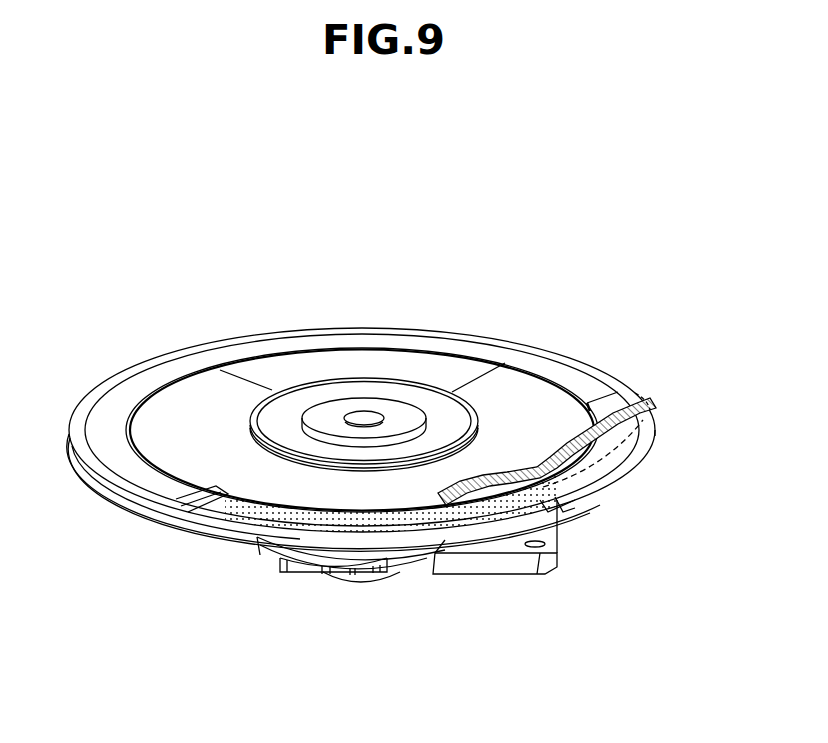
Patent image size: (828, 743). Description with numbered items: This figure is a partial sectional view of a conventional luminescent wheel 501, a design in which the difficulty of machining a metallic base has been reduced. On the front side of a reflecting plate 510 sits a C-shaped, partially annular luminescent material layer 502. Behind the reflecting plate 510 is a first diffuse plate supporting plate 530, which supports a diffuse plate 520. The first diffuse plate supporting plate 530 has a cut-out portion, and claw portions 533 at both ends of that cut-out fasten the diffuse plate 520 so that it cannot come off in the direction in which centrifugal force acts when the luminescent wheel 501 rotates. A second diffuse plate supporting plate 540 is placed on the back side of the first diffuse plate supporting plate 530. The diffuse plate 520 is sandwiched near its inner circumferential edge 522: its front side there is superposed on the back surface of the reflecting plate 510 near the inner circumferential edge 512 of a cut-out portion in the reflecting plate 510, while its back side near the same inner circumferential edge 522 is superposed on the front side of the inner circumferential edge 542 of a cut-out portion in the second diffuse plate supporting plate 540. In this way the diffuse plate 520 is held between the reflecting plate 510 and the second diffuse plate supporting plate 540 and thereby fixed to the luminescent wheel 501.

The luminescent wheel 501 is at (525, 250).
The luminescent material layer 502 is at (223, 352).
The reflecting plate 510 is at (197, 400).
The inner circumferential edge 512 is at (380, 507).
The diffuse plate 520 is at (218, 525).
The inner circumferential edge 522 is at (480, 500).
The first diffuse plate supporting plate 530 is at (582, 507).
The claw portions 533 is at (563, 508).
The second diffuse plate supporting plate 540 is at (598, 500).
The inner circumferential edge 542 is at (457, 543).